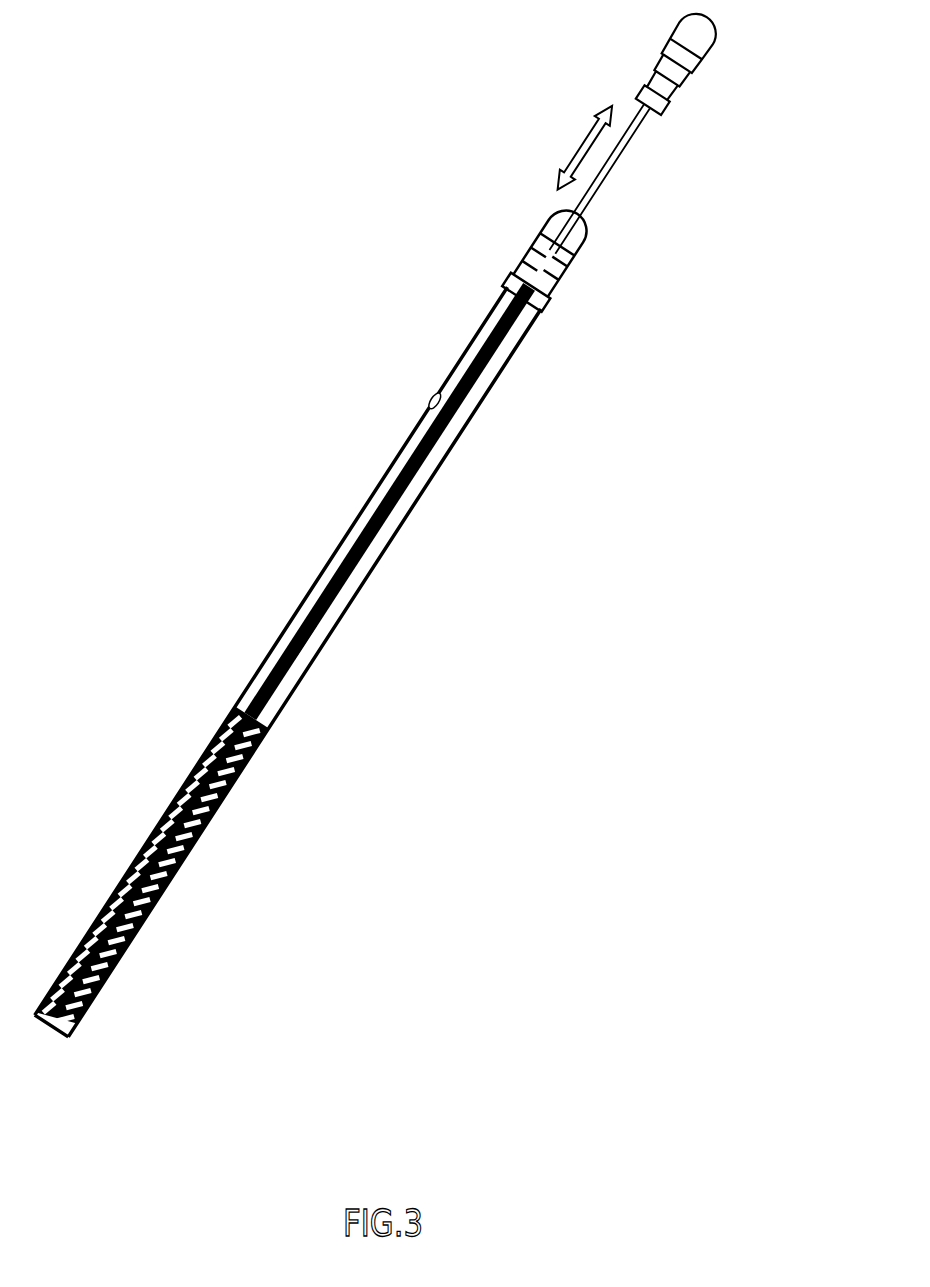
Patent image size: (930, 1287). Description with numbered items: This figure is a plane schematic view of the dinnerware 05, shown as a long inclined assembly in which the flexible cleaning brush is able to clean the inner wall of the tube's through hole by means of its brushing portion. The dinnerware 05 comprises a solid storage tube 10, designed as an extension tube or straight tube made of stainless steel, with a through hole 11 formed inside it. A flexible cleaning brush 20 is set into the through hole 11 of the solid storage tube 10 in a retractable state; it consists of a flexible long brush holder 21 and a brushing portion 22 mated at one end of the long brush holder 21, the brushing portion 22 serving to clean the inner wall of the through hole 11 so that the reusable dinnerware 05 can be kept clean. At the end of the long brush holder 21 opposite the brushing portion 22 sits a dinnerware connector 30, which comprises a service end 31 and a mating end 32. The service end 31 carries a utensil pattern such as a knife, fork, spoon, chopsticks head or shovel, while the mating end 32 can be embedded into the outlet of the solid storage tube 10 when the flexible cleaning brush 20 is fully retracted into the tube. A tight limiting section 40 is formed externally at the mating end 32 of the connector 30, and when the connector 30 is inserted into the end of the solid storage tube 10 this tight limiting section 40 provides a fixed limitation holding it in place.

The dinnerware 05 is at (385, 521).
The solid storage tube 10 is at (374, 578).
The through hole 11 is at (433, 418).
The flexible cleaning brush 20 is at (297, 674).
The long brush holder 21 is at (304, 649).
The brushing portion 22 is at (224, 796).
The dinnerware connector 30 is at (607, 265).
The service end 31 is at (597, 230).
The mating end 32 is at (564, 285).
The tight limiting section 40 is at (530, 331).